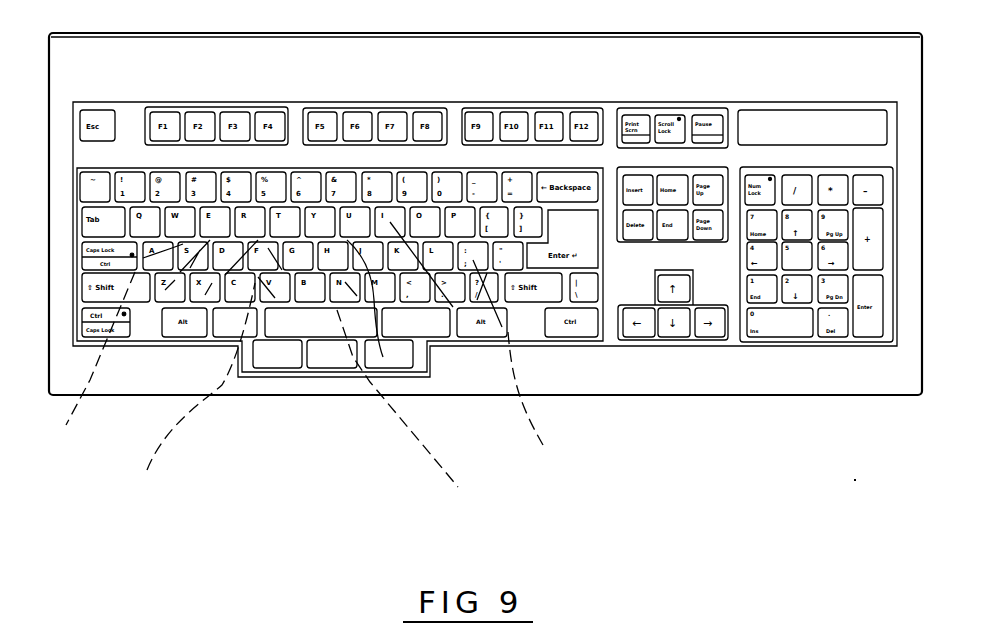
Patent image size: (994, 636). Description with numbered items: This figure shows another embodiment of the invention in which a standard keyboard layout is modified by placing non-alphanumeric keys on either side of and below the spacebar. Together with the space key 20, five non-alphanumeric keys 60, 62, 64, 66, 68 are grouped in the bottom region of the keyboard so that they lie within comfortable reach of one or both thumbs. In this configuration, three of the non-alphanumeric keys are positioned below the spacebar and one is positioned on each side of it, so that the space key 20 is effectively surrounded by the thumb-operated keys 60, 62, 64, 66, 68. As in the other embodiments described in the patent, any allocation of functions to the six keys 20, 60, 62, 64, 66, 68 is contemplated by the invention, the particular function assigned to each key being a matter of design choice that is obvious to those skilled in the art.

The space key 20 is at (302, 324).
The non-alphanumeric key 60 is at (228, 315).
The non-alphanumeric key 62 is at (282, 352).
The non-alphanumeric key 64 is at (329, 355).
The non-alphanumeric key 66 is at (393, 359).
The non-alphanumeric key 68 is at (432, 330).